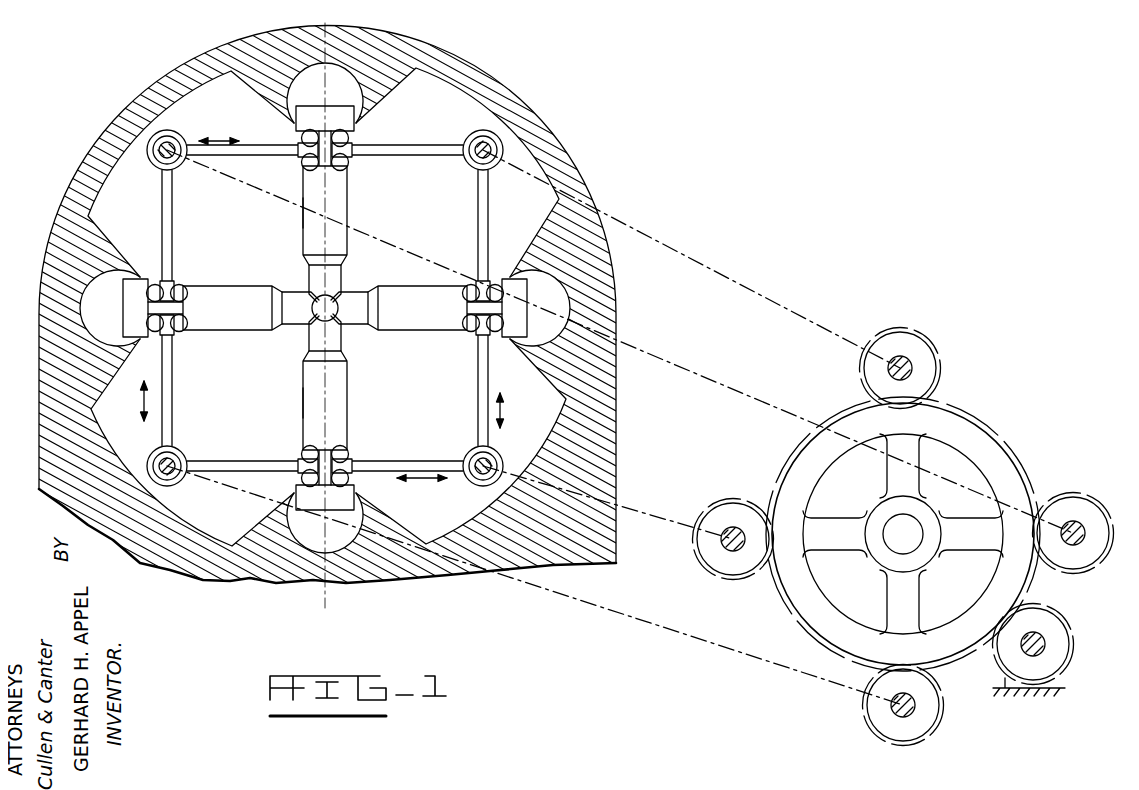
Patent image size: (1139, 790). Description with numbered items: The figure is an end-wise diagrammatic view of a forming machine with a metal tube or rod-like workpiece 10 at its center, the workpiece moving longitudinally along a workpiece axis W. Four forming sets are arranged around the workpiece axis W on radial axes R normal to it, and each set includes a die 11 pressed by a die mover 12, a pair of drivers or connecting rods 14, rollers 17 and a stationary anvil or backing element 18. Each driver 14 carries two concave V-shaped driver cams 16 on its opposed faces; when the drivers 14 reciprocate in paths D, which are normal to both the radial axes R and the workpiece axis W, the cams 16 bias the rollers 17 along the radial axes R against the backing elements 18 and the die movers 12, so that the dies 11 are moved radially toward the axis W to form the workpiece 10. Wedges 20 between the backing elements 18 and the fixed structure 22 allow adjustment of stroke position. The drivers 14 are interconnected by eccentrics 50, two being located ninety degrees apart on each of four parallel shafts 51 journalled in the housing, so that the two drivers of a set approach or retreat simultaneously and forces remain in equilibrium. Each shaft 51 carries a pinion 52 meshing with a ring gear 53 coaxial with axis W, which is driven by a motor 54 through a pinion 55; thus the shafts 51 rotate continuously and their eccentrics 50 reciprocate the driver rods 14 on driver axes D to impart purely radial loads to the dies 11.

The workpiece 10 is at (346, 302).
The die 11 is at (296, 300).
The die mover 12 is at (306, 237).
The driver or connecting rod 14 is at (233, 158).
The driver cam 16 is at (349, 140).
The roller 17 is at (304, 138).
The backing element 18 is at (352, 114).
The wedge 20 is at (300, 75).
The fixed structure 22 is at (464, 73).
The eccentric 50 is at (498, 138).
The shaft 51 is at (492, 153).
The pinion 52 is at (937, 370).
The ring gear 53 is at (992, 447).
The motor 54 is at (1046, 648).
The pinion 55 is at (1063, 638).
The radial axis R is at (349, 212).
The workpiece axis W is at (316, 322).
The driver path D is at (218, 140).